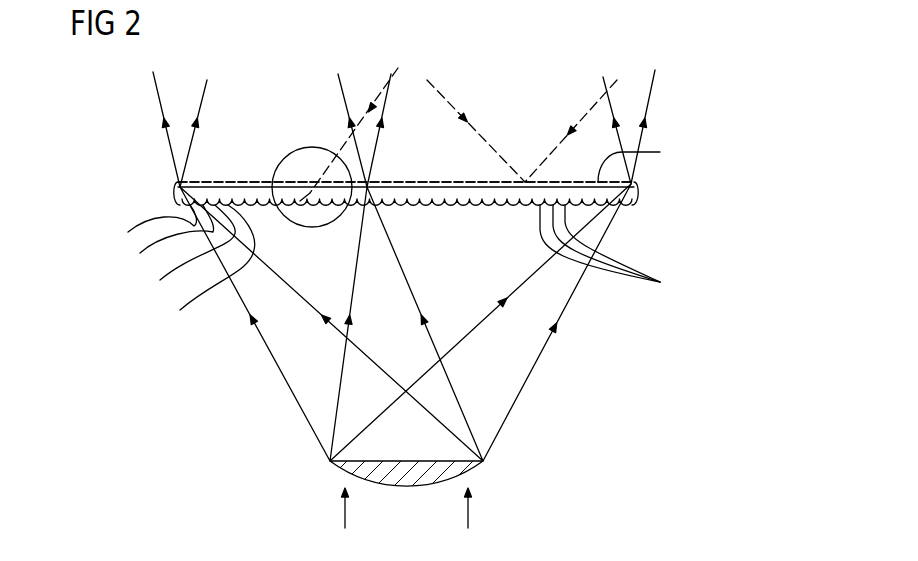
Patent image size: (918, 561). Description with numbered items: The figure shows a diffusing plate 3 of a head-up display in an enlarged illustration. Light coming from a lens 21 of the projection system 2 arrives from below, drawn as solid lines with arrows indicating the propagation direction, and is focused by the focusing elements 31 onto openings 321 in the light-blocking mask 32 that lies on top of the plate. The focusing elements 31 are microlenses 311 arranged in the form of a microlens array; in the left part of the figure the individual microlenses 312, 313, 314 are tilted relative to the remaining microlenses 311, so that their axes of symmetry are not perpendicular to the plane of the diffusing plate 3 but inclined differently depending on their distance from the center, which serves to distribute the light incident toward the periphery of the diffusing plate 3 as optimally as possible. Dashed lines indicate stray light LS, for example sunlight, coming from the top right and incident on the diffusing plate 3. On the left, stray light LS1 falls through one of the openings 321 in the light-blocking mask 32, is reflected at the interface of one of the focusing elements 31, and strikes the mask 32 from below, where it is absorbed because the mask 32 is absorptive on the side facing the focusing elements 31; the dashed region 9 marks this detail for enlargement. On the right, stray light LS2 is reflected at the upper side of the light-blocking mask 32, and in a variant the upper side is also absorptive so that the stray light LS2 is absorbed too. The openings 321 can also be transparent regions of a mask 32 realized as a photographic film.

The projection system 2 is at (404, 299).
The lens 21 is at (484, 462).
The diffusing plate 3 is at (424, 231).
The focusing elements 31 is at (632, 204).
The microlenses 311 is at (421, 273).
The tilted microlens 312 is at (180, 258).
The tilted microlens 313 is at (161, 243).
The tilted microlens 314 is at (143, 227).
The light-blocking mask 32 is at (642, 170).
The openings 321 is at (660, 152).
The dashed region 9 is at (298, 130).
The stray light LS is at (634, 60).
The stray light LS1 is at (378, 92).
The stray light LS2 is at (590, 110).